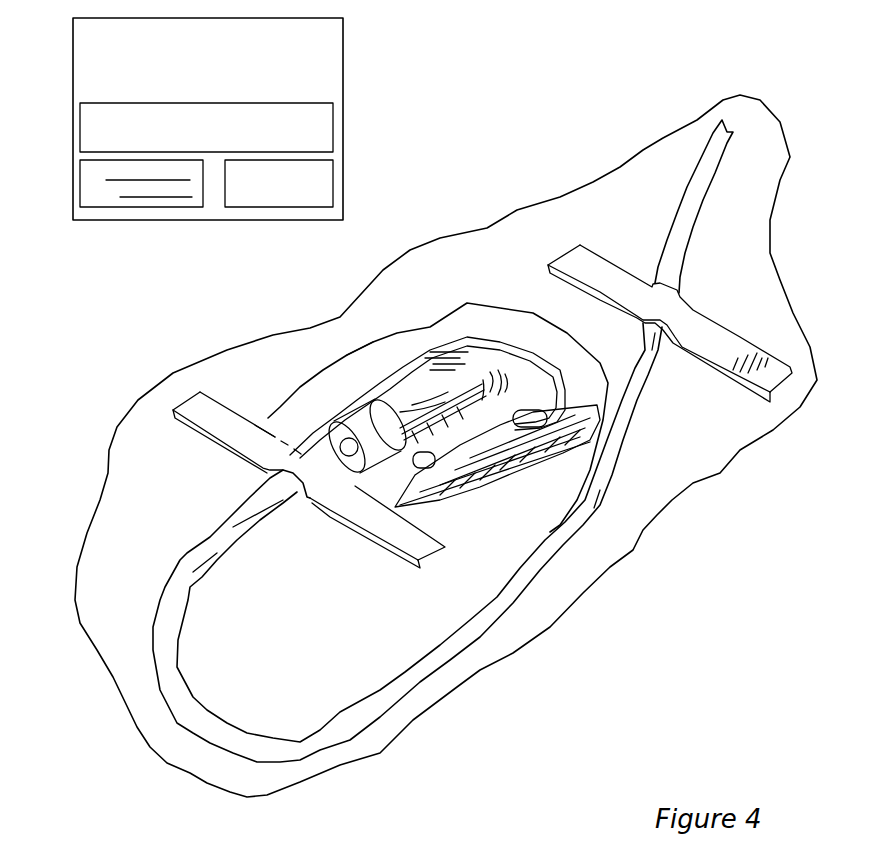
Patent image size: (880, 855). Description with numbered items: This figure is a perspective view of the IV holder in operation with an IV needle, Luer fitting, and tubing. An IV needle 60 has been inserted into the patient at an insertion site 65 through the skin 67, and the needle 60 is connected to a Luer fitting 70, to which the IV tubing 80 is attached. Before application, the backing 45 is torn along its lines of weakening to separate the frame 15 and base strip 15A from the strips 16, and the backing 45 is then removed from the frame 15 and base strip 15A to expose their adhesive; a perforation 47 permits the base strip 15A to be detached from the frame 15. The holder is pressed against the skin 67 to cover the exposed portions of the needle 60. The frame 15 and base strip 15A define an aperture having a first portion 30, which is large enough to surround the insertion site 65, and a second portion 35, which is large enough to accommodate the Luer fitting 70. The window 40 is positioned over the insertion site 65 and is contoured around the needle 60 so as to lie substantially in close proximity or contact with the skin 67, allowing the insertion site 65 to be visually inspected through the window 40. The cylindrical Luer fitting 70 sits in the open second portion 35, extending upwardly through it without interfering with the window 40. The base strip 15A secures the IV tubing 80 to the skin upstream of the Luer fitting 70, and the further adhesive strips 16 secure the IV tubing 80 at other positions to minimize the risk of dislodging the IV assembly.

The frame 15 is at (361, 300).
The base strip 15A is at (301, 440).
The strips 16 is at (406, 252).
The first portion 30 is at (573, 456).
The second portion 35 is at (521, 532).
The window 40 is at (427, 306).
The backing 45 is at (235, 119).
The perforation 47 is at (254, 353).
The IV needle 60 is at (443, 320).
The insertion site 65 is at (477, 298).
The skin 67 is at (434, 446).
The Luer fitting 70 is at (358, 365).
The IV tubing 80 is at (443, 441).